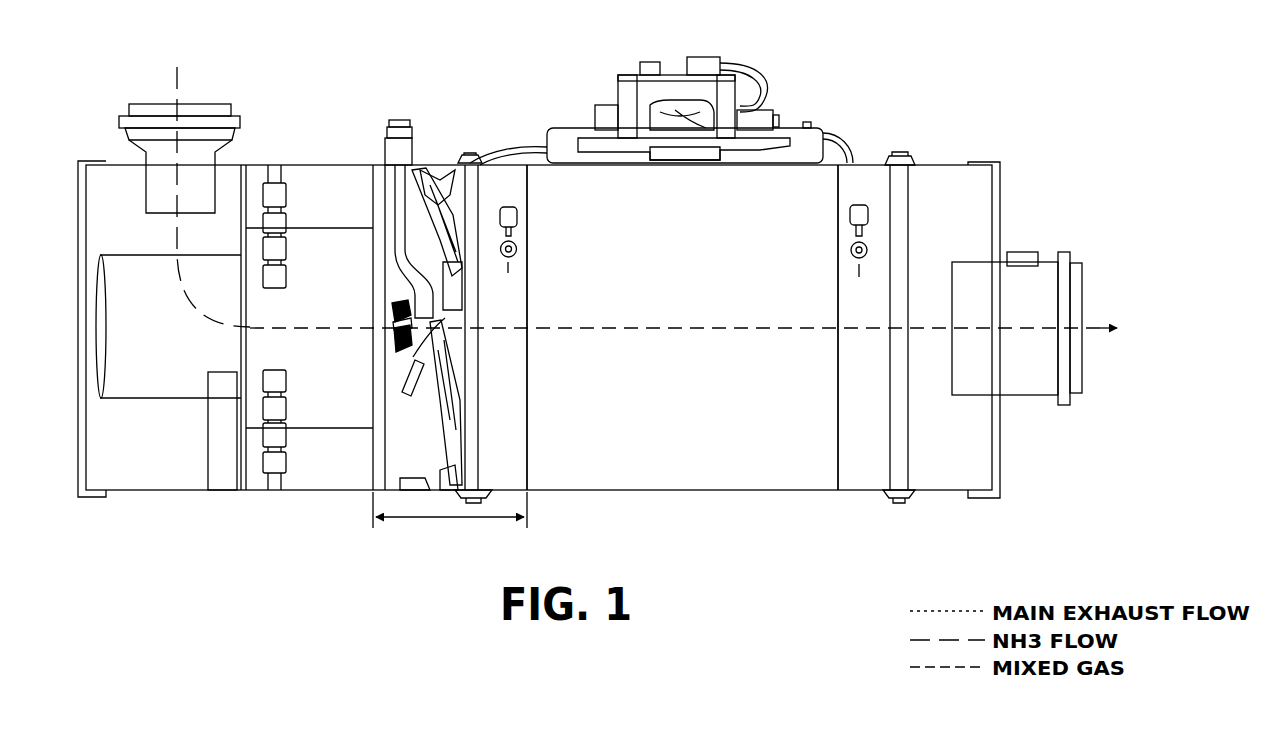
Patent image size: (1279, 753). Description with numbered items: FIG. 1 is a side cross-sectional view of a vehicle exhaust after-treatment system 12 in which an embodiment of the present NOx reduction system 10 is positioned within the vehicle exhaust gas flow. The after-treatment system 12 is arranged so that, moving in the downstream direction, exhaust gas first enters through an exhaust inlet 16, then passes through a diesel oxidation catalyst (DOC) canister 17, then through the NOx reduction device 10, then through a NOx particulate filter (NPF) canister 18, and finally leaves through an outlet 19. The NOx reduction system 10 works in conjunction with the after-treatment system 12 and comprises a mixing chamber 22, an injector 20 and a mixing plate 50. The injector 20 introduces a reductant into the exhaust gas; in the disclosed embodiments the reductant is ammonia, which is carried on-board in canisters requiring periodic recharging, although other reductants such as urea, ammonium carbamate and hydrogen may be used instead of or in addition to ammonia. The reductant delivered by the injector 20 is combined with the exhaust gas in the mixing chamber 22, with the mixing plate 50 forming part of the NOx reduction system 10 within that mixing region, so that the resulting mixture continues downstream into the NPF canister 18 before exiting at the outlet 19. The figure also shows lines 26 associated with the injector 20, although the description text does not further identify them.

The NOx reduction system 10 is at (509, 498).
The exhaust gas after-treatment system 12 is at (838, 68).
The exhaust inlet 16 is at (193, 100).
The diesel oxidation catalyst canister 17 is at (323, 445).
The NOx particulate filter canister 18 is at (753, 436).
The outlet 19 is at (1048, 259).
The injector 20 is at (393, 298).
The mixing chamber 22 is at (425, 417).
The supply hoses 26 is at (458, 195).
The mixing plate 50 is at (402, 196).